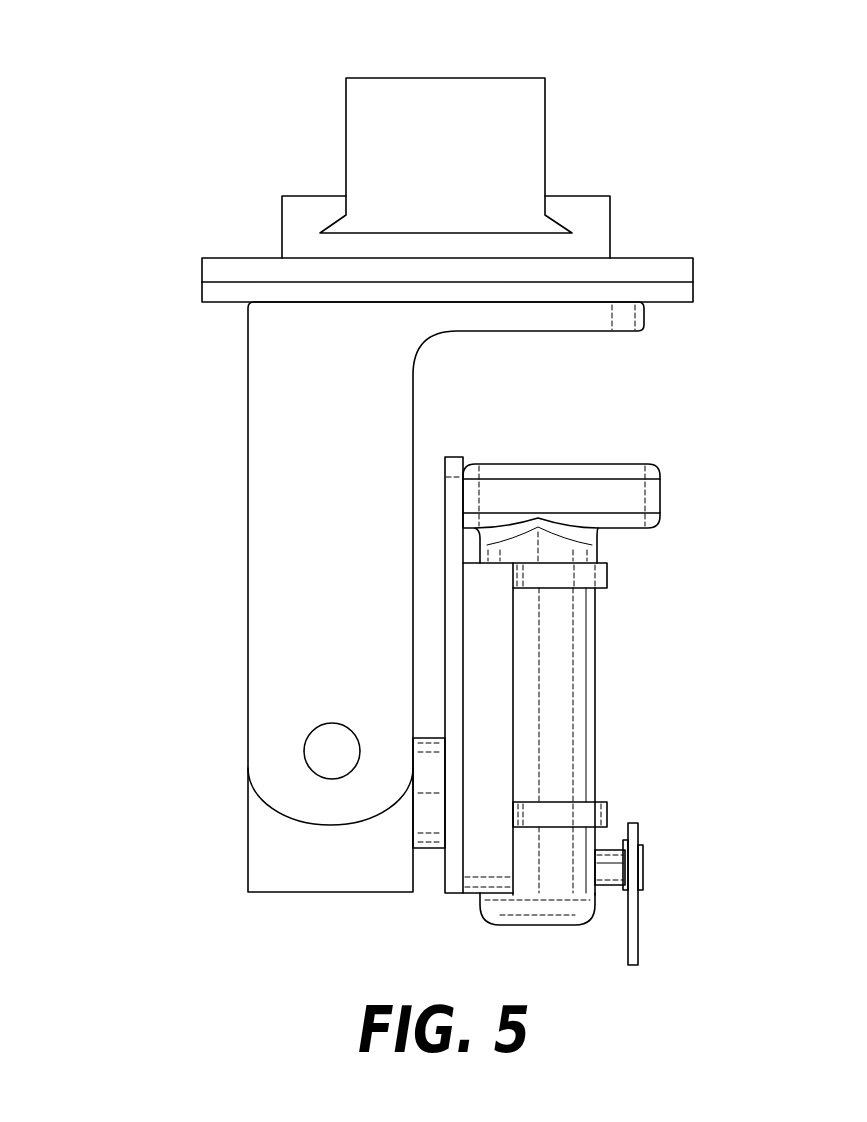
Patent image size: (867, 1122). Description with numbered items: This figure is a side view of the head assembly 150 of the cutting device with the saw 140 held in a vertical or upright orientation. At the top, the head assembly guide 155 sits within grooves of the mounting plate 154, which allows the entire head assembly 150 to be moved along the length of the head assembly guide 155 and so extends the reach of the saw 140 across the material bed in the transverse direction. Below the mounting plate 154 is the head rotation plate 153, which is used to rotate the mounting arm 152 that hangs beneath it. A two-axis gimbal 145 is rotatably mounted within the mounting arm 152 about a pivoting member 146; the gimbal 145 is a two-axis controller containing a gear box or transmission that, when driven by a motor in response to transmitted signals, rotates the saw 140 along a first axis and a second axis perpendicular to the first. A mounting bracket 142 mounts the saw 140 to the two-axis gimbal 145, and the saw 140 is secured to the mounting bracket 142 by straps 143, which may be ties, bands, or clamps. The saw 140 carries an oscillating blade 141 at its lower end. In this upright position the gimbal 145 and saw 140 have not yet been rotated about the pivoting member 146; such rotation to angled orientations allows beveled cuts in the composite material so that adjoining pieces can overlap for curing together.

The head assembly 150 is at (173, 78).
The head assembly guide 155 is at (442, 93).
The mounting plate 154 is at (300, 227).
The head rotation plate 153 is at (202, 268).
The mounting arm 152 is at (297, 520).
The pivoting member 146 is at (323, 750).
The two-axis gimbal 145 is at (268, 864).
The mounting bracket 142 is at (482, 862).
The saw 140 is at (565, 721).
The straps 143 is at (600, 573).
The oscillating blade 141 is at (640, 942).